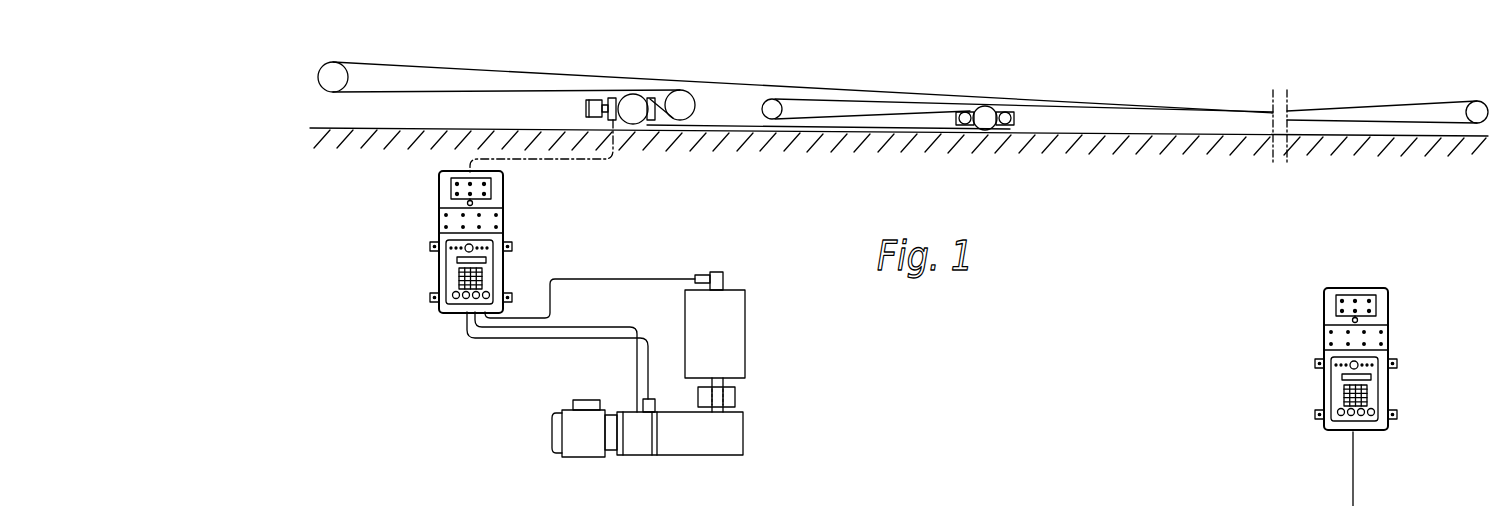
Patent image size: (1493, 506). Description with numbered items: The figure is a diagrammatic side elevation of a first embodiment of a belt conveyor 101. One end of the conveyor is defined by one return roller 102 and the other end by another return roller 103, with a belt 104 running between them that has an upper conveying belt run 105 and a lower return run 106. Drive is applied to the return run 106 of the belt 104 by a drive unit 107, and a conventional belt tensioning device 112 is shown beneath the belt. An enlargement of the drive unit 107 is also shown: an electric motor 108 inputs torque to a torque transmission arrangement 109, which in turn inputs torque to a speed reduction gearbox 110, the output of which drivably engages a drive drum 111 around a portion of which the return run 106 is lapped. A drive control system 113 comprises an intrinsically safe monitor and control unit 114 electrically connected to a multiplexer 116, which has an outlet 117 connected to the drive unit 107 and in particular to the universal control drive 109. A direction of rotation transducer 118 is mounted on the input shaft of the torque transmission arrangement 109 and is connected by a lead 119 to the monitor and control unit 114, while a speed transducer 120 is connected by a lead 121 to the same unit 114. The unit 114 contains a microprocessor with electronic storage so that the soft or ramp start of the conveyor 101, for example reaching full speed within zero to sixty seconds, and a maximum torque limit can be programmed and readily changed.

The belt conveyor 101 is at (735, 70).
The return roller 102 is at (350, 79).
The return roller 103 is at (1477, 108).
The belt 104 is at (445, 62).
The upper conveying belt run 105 is at (825, 87).
The lower return run 106 is at (400, 91).
The drive unit 107 is at (575, 108).
The electric motor 108 is at (593, 100).
The torque transmission arrangement 109 is at (640, 445).
The speed reduction gearbox 110 is at (636, 103).
The drive drum 111 is at (745, 331).
The belt tensioning device 112 is at (988, 126).
The drive control system 113 is at (414, 247).
The monitor and control unit 114 is at (455, 268).
The multiplexer 116 is at (503, 190).
The outlet 117 is at (585, 161).
The direction of rotation transducer 118 is at (655, 404).
The lead 119 is at (593, 327).
The speed transducer 120 is at (703, 272).
The lead 121 is at (609, 276).